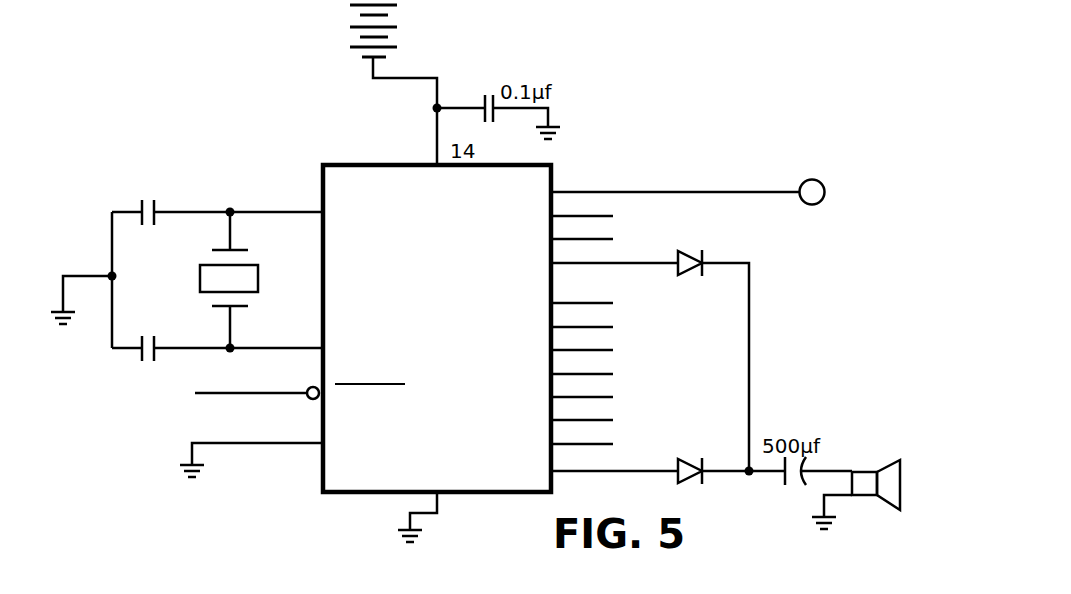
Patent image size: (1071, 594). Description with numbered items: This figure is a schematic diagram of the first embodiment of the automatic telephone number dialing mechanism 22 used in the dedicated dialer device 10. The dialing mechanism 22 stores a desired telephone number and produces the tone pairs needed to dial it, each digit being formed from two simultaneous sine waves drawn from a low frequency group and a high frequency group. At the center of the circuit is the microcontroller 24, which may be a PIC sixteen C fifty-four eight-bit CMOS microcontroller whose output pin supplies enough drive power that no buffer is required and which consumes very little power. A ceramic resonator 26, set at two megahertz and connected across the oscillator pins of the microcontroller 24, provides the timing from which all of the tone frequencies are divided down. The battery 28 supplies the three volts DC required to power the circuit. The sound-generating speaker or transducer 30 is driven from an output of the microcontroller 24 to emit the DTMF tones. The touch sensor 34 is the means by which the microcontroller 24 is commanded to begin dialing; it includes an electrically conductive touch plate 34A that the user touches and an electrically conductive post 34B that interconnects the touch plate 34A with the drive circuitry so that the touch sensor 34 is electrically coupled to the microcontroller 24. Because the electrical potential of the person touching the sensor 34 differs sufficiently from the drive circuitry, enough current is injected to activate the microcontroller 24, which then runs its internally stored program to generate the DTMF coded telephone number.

The dedicated dialer device 10 is at (250, 104).
The automatic telephone number dialing mechanism 22 is at (680, 79).
The microcontroller 24 is at (364, 494).
The ceramic resonator 26 is at (198, 275).
The battery 28 is at (425, 19).
The sound-generating speaker or transducer 30 is at (884, 460).
The touch sensor 34 is at (813, 165).
The touch plate 34A is at (822, 189).
The post 34B is at (722, 168).